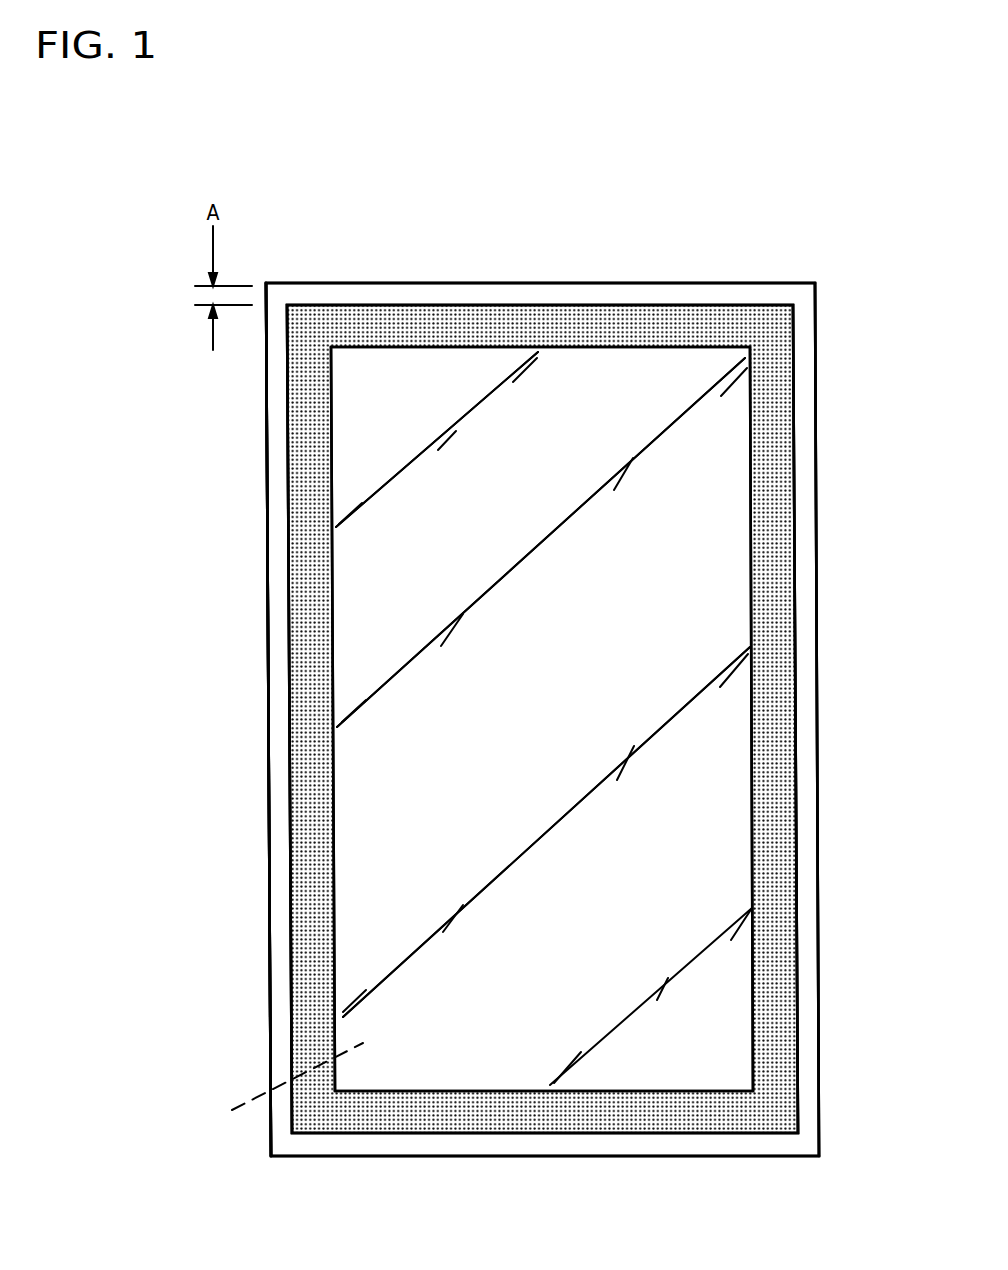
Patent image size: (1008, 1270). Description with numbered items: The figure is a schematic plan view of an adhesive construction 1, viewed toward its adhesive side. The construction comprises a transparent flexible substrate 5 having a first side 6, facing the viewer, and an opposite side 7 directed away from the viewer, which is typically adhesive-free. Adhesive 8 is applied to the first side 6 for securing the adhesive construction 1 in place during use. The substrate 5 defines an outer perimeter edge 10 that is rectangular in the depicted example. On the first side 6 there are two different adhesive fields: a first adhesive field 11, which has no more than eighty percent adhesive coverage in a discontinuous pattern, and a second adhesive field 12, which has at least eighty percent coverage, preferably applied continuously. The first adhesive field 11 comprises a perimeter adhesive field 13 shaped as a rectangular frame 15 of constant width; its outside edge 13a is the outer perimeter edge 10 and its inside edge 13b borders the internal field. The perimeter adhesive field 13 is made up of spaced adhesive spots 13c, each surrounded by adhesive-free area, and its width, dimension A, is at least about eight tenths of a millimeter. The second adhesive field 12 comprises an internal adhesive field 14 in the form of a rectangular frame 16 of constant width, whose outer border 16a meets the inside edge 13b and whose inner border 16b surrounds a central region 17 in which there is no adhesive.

The adhesive construction 1 is at (777, 241).
The transparent flexible substrate 5 is at (477, 563).
The first side 6 is at (524, 703).
The opposite side 7 is at (232, 1110).
The adhesive 8 is at (331, 560).
The outer perimeter edge 10 is at (403, 291).
The first adhesive field 11 is at (283, 466).
The second adhesive field 12 is at (326, 415).
The perimeter adhesive field 13 is at (616, 300).
The outside edge 13a is at (486, 296).
The inside edge 13b is at (344, 304).
The adhesive spots 13c is at (282, 418).
The internal adhesive field 14 is at (664, 325).
The rectangular frame 15 is at (283, 760).
The rectangular frame 16 is at (336, 768).
The outer border 16a is at (472, 306).
The inner border 16b is at (575, 348).
The central region 17 is at (470, 817).